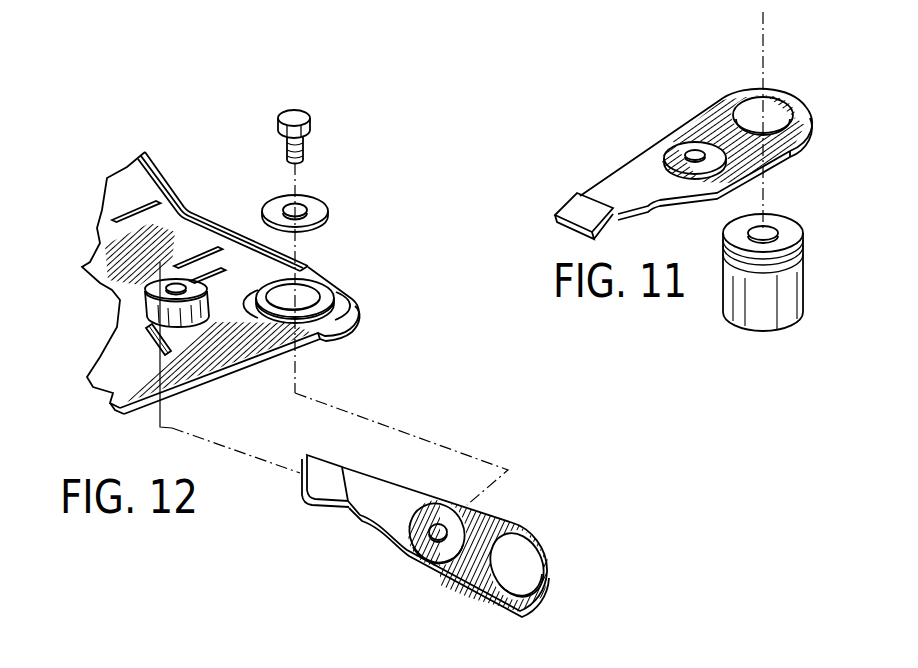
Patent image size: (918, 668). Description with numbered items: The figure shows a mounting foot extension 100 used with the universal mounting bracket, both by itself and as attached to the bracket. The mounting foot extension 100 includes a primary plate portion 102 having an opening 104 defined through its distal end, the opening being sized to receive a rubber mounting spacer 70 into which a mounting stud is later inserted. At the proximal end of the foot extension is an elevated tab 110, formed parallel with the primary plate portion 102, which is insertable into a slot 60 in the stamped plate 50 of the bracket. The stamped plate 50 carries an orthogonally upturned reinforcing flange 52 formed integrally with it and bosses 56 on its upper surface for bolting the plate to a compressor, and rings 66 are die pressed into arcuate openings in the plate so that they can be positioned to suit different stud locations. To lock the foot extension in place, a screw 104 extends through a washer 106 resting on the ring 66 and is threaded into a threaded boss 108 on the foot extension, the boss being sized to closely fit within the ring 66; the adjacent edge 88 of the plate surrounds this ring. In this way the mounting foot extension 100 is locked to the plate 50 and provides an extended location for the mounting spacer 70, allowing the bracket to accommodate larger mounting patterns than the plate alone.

In FIG. 12, the stamped plate 50 is at (110, 275).
In FIG. 12, the reinforcing flange 52 is at (183, 193).
In FIG. 12, the boss 56 is at (153, 293).
In FIG. 12, the slot 60 is at (148, 349).
In FIG. 12, the ring 66 is at (323, 290).
In FIG. 11, the rubber mounting spacer 70 is at (757, 315).
In FIG. 12, the rim 88 is at (349, 296).
In FIG. 11, the mounting foot extension 100 is at (649, 83).
In FIG. 12, the mounting foot extension 100 is at (549, 512).
In FIG. 11, the primary plate portion 102 is at (633, 173).
In FIG. 12, the primary plate portion 102 is at (483, 580).
In FIG. 11, the opening / screw 104 is at (782, 112).
In FIG. 12, the opening / screw 104 is at (310, 145).
In FIG. 12, the washer 106 is at (315, 210).
In FIG. 11, the threaded boss 108 is at (708, 147).
In FIG. 12, the threaded boss 108 is at (440, 522).
In FIG. 11, the tab 110 is at (573, 207).
In FIG. 12, the tab 110 is at (332, 487).